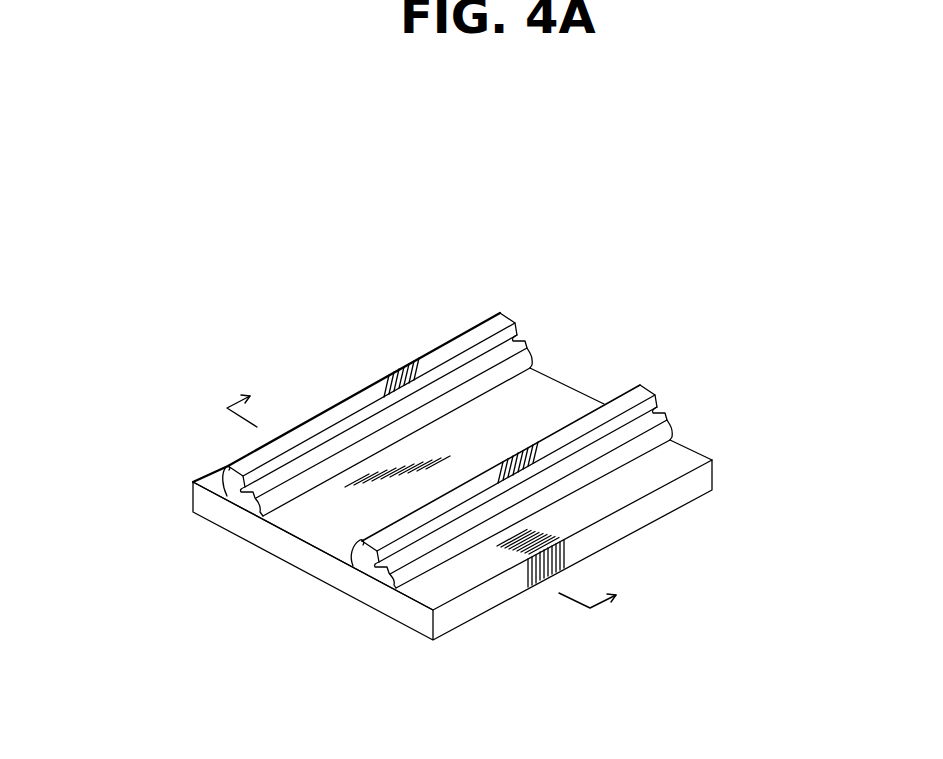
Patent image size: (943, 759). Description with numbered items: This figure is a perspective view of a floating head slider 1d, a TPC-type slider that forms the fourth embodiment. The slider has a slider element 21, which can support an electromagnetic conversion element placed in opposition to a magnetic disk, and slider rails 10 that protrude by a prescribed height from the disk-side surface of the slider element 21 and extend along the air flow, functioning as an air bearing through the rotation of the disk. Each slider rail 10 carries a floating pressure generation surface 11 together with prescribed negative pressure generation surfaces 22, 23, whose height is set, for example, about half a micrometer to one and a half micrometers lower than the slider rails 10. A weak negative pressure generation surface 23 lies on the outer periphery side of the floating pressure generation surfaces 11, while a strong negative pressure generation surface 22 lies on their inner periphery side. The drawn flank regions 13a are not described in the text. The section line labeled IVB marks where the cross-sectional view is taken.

The floating head slider 1d is at (877, 138).
The slider rail 10 is at (302, 434).
The floating pressure generation surface 11 is at (456, 350).
The side flank of rail 13a is at (524, 354).
The slider element 21 is at (567, 392).
The strong negative pressure generation surface 22 is at (262, 492).
The weak negative pressure generation surface 23 is at (224, 468).